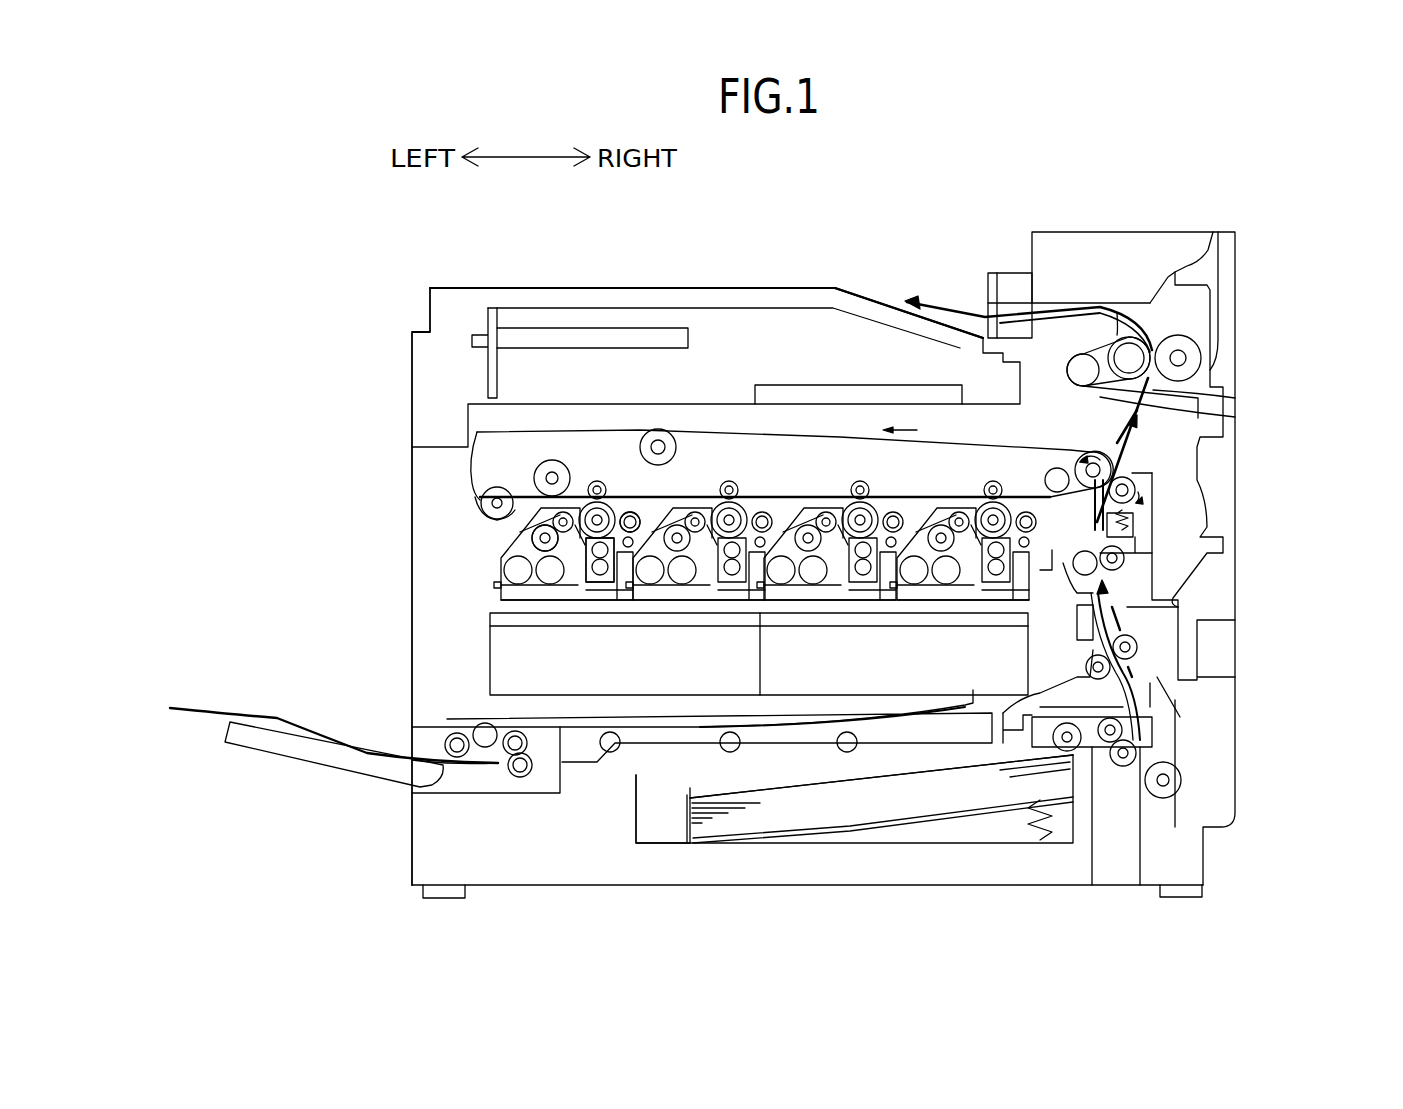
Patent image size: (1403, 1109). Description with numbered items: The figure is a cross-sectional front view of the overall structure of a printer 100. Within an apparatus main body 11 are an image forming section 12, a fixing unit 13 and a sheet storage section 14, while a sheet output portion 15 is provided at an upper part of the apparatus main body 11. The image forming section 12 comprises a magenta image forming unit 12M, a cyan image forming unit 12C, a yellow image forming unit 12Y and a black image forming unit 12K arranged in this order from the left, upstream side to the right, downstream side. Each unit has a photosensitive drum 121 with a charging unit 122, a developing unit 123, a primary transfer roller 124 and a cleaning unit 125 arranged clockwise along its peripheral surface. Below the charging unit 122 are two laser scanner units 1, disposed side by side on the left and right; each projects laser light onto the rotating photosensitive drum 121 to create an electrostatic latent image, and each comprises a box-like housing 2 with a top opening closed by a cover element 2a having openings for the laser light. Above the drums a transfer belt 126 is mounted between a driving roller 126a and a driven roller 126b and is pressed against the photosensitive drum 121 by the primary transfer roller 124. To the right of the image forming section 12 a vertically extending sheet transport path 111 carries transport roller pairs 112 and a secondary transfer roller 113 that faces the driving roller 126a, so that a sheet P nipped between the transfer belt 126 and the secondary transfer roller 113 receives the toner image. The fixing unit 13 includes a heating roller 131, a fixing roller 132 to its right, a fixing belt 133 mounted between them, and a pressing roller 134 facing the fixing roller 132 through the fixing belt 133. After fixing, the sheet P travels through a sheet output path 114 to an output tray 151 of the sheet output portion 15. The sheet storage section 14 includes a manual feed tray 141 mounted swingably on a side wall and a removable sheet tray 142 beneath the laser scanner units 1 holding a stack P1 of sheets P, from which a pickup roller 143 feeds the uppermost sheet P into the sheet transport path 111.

The printer 100 is at (420, 262).
The apparatus main body 11 is at (410, 487).
The sheet output portion 15 is at (740, 258).
The output tray 151 is at (828, 290).
The sheet output path 114 is at (1117, 313).
The image forming section 12 is at (920, 352).
The magenta image forming unit 12M is at (622, 478).
The cyan image forming unit 12C is at (710, 472).
The yellow image forming unit 12Y is at (840, 478).
The black image forming unit 12K is at (978, 478).
The photosensitive drum 121 is at (545, 462).
The charging unit 122 is at (600, 602).
The developing unit 123 is at (510, 550).
The primary transfer roller 124 is at (653, 433).
The cleaning unit 125 is at (628, 517).
The transfer belt 126 is at (1033, 447).
The driving roller 126a is at (1107, 453).
The driven roller 126b is at (535, 475).
The fixing unit 13 is at (1330, 350).
The heating roller 131 is at (1133, 387).
The fixing roller 132 is at (1135, 367).
The fixing belt 133 is at (1083, 380).
The pressing roller 134 is at (1197, 353).
The secondary transfer roller 113 is at (1153, 473).
The transport roller pairs 112 is at (1110, 668).
The sheet transport path 111 is at (1150, 683).
The sheet storage section 14 is at (255, 775).
The manual feed tray 141 is at (337, 757).
The sheet tray 142 is at (720, 862).
The pickup roller 143 is at (1073, 748).
The laser scanner unit 1 is at (473, 684).
The housing 2 is at (490, 668).
The cover element 2a is at (527, 620).
The sheet P is at (962, 312).
The stack P1 is at (690, 815).